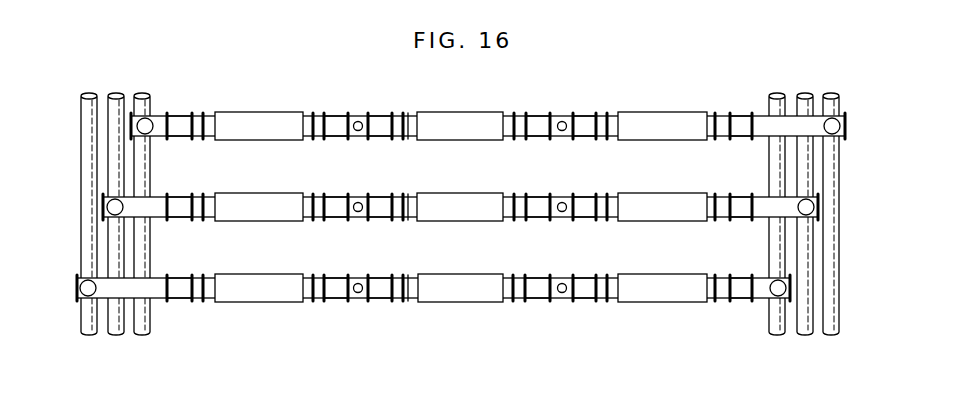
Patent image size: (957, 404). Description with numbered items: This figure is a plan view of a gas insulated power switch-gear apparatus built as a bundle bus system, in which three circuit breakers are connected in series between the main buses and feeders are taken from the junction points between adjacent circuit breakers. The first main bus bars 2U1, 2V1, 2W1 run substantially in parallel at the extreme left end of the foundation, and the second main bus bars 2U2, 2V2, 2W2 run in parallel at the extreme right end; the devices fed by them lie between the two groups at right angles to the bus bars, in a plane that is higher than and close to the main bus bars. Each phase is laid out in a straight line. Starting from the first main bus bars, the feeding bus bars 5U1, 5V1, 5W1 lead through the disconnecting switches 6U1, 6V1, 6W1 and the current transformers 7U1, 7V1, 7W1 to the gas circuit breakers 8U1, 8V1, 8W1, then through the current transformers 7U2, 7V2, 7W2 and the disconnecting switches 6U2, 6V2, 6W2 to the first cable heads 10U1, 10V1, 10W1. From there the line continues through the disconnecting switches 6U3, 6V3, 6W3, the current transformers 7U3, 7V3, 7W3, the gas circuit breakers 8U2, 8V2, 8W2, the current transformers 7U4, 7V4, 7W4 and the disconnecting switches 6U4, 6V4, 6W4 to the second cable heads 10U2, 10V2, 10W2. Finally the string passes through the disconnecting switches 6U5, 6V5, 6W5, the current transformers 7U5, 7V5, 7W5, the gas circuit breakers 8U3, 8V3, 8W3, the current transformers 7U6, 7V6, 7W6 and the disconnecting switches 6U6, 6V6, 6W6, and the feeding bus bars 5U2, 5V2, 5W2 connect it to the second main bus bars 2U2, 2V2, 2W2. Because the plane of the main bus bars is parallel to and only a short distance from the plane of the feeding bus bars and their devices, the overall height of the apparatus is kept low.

The first main bus bar 2U1 is at (142, 95).
The first main bus bar 2V1 is at (116, 94).
The first main bus bar 2W1 is at (88, 95).
The second main bus bar 2U2 is at (831, 95).
The second main bus bar 2V2 is at (805, 94).
The second main bus bar 2W2 is at (777, 95).
The feeding bus bar 5U1 is at (157, 131).
The feeding bus bar 5U2 is at (765, 137).
The feeding bus bar 5V1 is at (156, 197).
The feeding bus bar 5V2 is at (766, 218).
The feeding bus bar 5W1 is at (150, 293).
The feeding bus bar 5W2 is at (762, 294).
The disconnecting switch 6U1 is at (180, 116).
The disconnecting switch 6U2 is at (338, 116).
The disconnecting switch 6U3 is at (383, 116).
The disconnecting switch 6U4 is at (538, 116).
The disconnecting switch 6U5 is at (585, 116).
The disconnecting switch 6U6 is at (745, 116).
The disconnecting switch 6V1 is at (175, 218).
The disconnecting switch 6V2 is at (339, 197).
The disconnecting switch 6V3 is at (380, 197).
The disconnecting switch 6V4 is at (540, 197).
The disconnecting switch 6V5 is at (585, 218).
The disconnecting switch 6V6 is at (741, 197).
The disconnecting switch 6W1 is at (182, 283).
The disconnecting switch 6W2 is at (338, 298).
The disconnecting switch 6W3 is at (380, 283).
The disconnecting switch 6W4 is at (538, 298).
The disconnecting switch 6W5 is at (585, 298).
The disconnecting switch 6W6 is at (740, 298).
The current transformer 7U1 is at (198, 113).
The current transformer 7U2 is at (317, 113).
The current transformer 7U3 is at (400, 139).
The current transformer 7U4 is at (520, 113).
The current transformer 7U5 is at (620, 105).
The current transformer 7U6 is at (722, 113).
The current transformer 7V1 is at (198, 197).
The current transformer 7V2 is at (318, 188).
The current transformer 7V3 is at (397, 220).
The current transformer 7V4 is at (520, 194).
The current transformer 7V5 is at (602, 194).
The current transformer 7V6 is at (722, 194).
The current transformer 7W1 is at (194, 299).
The current transformer 7W2 is at (315, 279).
The current transformer 7W3 is at (402, 300).
The current transformer 7W4 is at (518, 279).
The current transformer 7W5 is at (612, 272).
The current transformer 7W6 is at (723, 282).
The gas circuit breaker 8U1 is at (258, 112).
The gas circuit breaker 8U2 is at (460, 112).
The gas circuit breaker 8U3 is at (677, 105).
The gas circuit breaker 8V1 is at (270, 194).
The gas circuit breaker 8V2 is at (462, 188).
The gas circuit breaker 8V3 is at (677, 188).
The gas circuit breaker 8W1 is at (262, 276).
The gas circuit breaker 8W2 is at (449, 278).
The gas circuit breaker 8W3 is at (677, 272).
The first cable head 10U1 is at (360, 113).
The second cable head 10U2 is at (563, 113).
The first cable head 10V1 is at (361, 212).
The second cable head 10V2 is at (570, 188).
The first cable head 10W1 is at (358, 298).
The second cable head 10W2 is at (565, 272).